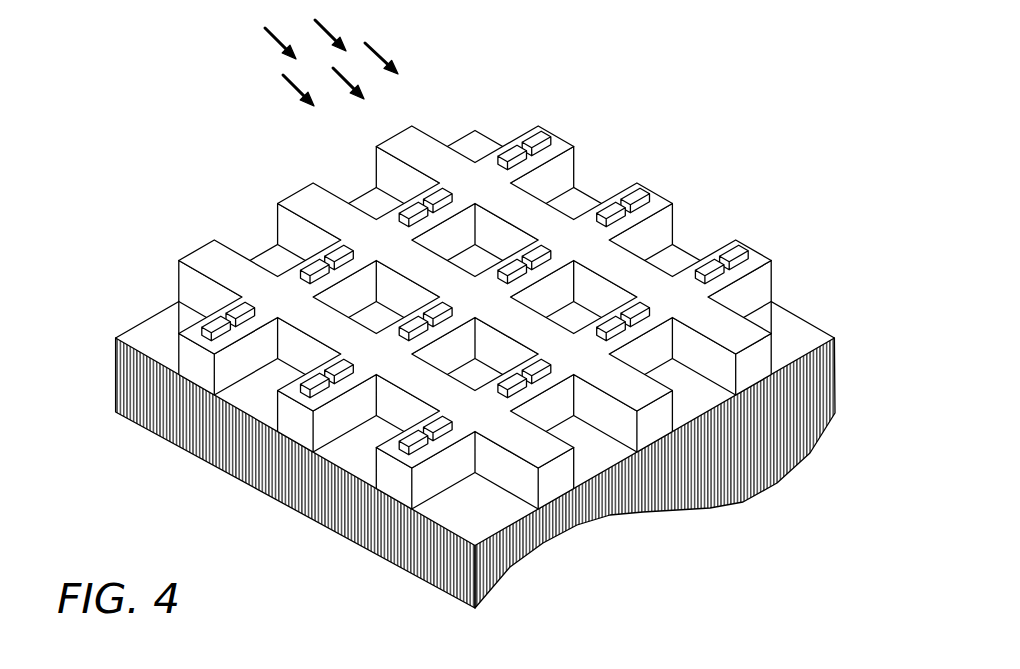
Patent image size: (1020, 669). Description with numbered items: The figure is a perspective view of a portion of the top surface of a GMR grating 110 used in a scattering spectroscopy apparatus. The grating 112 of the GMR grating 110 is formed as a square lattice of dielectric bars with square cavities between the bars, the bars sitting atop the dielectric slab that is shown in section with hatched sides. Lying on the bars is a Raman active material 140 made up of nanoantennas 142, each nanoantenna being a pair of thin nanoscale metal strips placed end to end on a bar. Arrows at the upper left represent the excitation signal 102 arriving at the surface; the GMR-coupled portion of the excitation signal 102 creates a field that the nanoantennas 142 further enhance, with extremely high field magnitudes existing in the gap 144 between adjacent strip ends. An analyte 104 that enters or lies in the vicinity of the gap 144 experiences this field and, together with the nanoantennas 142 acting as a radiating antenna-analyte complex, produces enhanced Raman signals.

The excitation signal 102 is at (381, 48).
The analyte 104 is at (482, 108).
The GMR grating 110 is at (730, 125).
The grating 112 is at (640, 262).
The Raman active material 140 is at (583, 117).
The nanoantennas 142 is at (338, 240).
The gap 144 is at (318, 256).